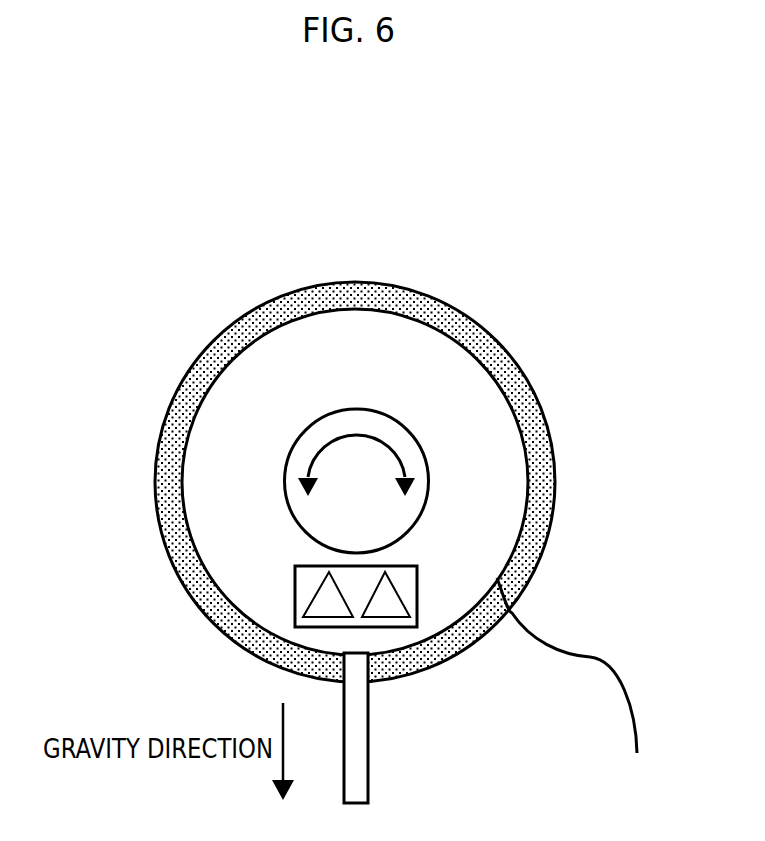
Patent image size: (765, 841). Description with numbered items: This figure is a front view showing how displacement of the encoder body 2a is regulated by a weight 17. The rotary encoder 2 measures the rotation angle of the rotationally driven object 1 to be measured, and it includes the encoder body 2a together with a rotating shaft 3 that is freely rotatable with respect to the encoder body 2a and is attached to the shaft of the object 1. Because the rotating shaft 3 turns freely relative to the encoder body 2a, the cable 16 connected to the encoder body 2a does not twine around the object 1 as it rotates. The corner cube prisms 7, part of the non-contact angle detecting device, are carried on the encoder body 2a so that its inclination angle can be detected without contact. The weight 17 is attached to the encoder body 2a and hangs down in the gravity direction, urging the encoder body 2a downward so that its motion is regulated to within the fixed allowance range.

The object to be measured 1 is at (281, 310).
The rotary encoder 2 is at (459, 387).
The encoder body 2a is at (452, 393).
The rotating shaft 3 is at (372, 422).
The corner cube prisms 7 is at (295, 595).
The cable 16 is at (593, 657).
The weight 17 is at (360, 755).